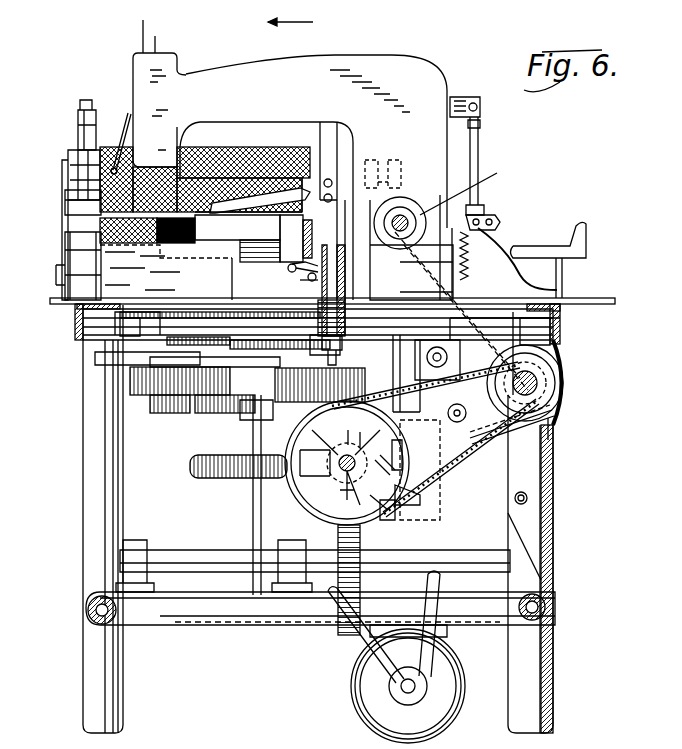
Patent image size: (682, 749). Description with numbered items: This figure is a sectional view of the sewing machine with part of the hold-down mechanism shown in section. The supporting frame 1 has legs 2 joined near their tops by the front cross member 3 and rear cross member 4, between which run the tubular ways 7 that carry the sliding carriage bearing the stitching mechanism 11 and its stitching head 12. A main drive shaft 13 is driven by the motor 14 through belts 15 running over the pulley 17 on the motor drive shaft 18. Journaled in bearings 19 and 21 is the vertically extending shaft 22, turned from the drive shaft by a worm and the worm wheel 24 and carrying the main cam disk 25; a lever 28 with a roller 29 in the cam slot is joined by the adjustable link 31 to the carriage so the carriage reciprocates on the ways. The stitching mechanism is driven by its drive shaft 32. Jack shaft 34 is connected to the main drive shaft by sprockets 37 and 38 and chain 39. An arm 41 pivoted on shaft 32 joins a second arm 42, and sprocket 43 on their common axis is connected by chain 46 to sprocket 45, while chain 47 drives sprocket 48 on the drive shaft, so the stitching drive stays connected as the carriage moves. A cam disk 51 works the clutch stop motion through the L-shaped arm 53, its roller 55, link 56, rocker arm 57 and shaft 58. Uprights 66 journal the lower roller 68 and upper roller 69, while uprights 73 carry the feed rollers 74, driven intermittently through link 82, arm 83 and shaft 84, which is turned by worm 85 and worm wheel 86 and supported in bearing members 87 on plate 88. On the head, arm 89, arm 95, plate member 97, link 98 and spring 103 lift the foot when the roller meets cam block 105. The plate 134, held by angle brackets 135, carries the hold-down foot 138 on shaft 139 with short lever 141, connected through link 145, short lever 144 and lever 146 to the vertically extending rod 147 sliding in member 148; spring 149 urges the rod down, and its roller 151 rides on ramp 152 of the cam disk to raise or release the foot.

The supporting frame 1 is at (70, 348).
The legs 2 is at (82, 515).
The front cross member 3 is at (76, 327).
The rear cross member 4 is at (553, 334).
The tubular ways 7 is at (126, 320).
The stitching mechanism 11 is at (436, 59).
The stitching head 12 is at (135, 82).
The main drive shaft 13 is at (330, 495).
The motor 14 is at (445, 725).
The belts 15 is at (448, 588).
The pulley 17 is at (396, 702).
The motor drive shaft 18 is at (401, 686).
The bearing 19 is at (259, 600).
The bearing 21 is at (230, 413).
The vertically extending shaft 22 is at (235, 533).
The worm wheel 24 is at (192, 462).
The main cam disk 25 is at (135, 395).
The lever 28 is at (92, 365).
The roller 29 is at (215, 404).
The adjustable link 31 is at (212, 330).
The drive shaft 32 is at (469, 189).
The jack shaft 34 is at (540, 386).
The sprocket 37 is at (547, 410).
The sprocket 38 is at (388, 508).
The chain 39 is at (422, 487).
The arm 41 is at (495, 238).
The second arm 42 is at (562, 310).
The sprocket 43 is at (455, 325).
The sprocket 45 is at (552, 416).
The chain 46 is at (556, 445).
The chain 47 is at (462, 298).
The sprocket 48 is at (407, 195).
The cam disk 51 is at (190, 400).
The L-shaped arm 53 is at (413, 455).
The roller 55 is at (388, 450).
The link 56 is at (464, 420).
The rocker arm 57 is at (405, 445).
The shaft 58 is at (488, 462).
The vertical portions 66 is at (68, 158).
The lower roller 68 is at (95, 252).
The upper roller 69 is at (100, 200).
The uprights 73 is at (80, 118).
The feed rollers 74 is at (210, 130).
The link 82 is at (365, 440).
The arm 83 is at (392, 530).
The shaft 84 is at (170, 596).
The worm 85 is at (412, 497).
The worm wheel 86 is at (360, 590).
The bearing members 87 is at (143, 545).
The plate 88 is at (200, 596).
The arm 89 is at (464, 98).
The arm 95 is at (130, 125).
The plate member 97 is at (488, 210).
The link 98 is at (477, 150).
The spring 103 is at (494, 222).
The cam block 105 is at (586, 235).
The plate 134 is at (237, 227).
The angle brackets 135 is at (272, 238).
The hold-down foot 138 is at (240, 147).
The shaft 139 is at (292, 160).
The short lever 141 is at (321, 135).
The short lever 144 is at (288, 270).
The link 145 is at (235, 260).
The lever 146 is at (306, 285).
The vertically extending rod 147 is at (364, 195).
The member 148 is at (375, 195).
The spring 149 is at (342, 342).
The roller 151 is at (342, 357).
The ramp 152 is at (275, 372).